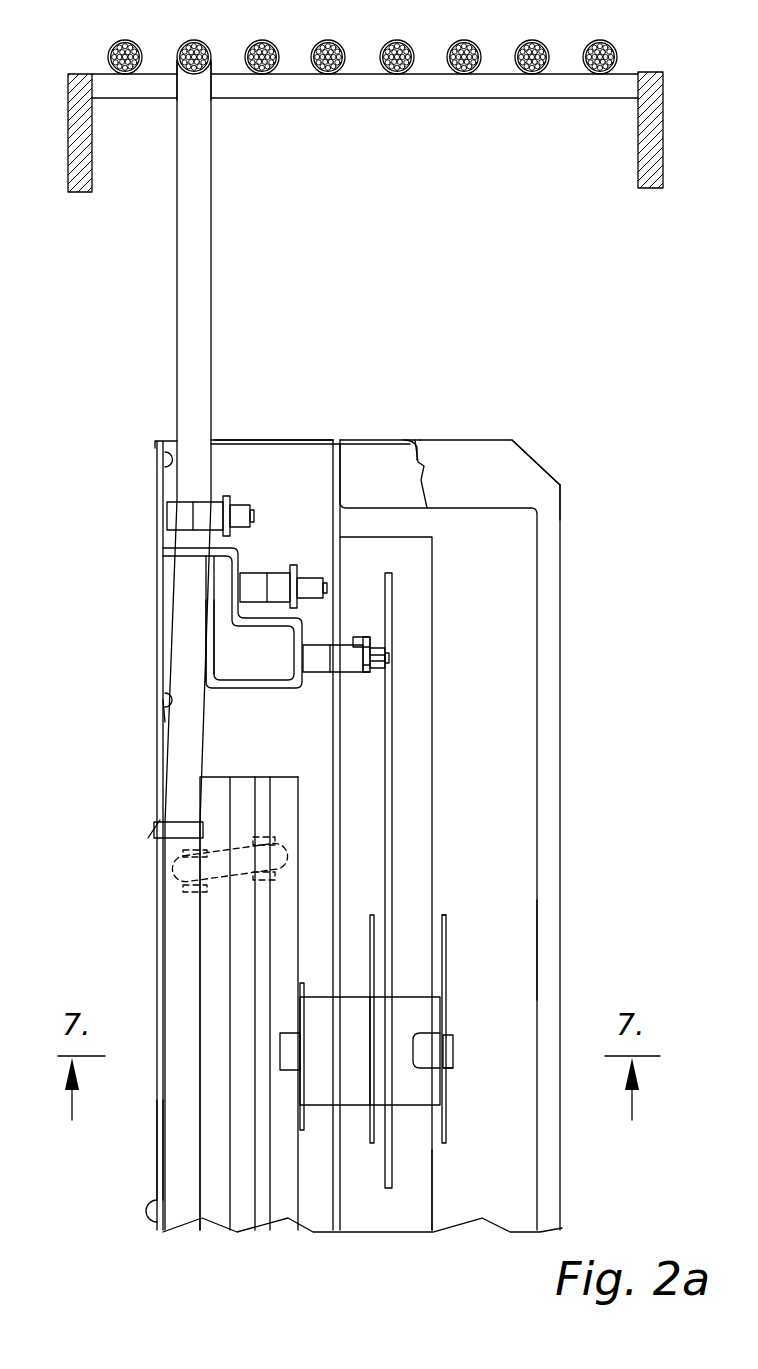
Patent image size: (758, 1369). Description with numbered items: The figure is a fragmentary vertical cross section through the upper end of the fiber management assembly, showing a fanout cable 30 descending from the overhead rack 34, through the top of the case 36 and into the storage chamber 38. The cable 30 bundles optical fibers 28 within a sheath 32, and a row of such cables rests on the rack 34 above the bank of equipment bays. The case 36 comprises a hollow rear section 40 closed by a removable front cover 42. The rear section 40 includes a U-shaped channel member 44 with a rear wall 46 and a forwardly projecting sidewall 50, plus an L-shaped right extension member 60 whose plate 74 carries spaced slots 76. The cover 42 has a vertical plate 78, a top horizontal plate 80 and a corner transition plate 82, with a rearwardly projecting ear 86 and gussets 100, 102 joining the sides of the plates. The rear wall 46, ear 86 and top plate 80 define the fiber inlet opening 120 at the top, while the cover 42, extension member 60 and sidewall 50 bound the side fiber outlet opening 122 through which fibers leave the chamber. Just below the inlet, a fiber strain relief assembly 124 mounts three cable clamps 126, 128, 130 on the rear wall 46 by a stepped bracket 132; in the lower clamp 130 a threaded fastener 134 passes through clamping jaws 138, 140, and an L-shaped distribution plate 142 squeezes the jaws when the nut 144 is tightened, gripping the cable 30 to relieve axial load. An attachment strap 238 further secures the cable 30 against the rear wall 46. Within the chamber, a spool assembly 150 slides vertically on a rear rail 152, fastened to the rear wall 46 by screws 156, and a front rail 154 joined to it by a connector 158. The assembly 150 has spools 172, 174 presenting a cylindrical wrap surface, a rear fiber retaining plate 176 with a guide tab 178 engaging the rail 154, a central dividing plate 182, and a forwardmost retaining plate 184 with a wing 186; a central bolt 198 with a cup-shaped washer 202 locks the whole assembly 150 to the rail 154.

The optical fibers 28 is at (195, 48).
The cable 30 is at (113, 44).
The sheath 32 is at (185, 45).
The overhead rack 34 is at (663, 133).
The case 36 is at (313, 442).
The storage chamber 38 is at (329, 1245).
The rear section 40 is at (160, 1140).
The front cover 42 is at (562, 808).
The channel member 44 is at (157, 630).
The rear wall 46 is at (160, 672).
The sidewall 50 is at (270, 450).
The right extension member 60 is at (423, 553).
The plate 74 is at (428, 1225).
The slots 76 is at (390, 776).
The vertical plate 78 is at (563, 632).
The top horizontal plate 80 is at (410, 440).
The corner transition plate 82 is at (548, 490).
The ear 86 is at (360, 440).
The gusset 100 is at (503, 455).
The gusset 102 is at (395, 470).
The fiber inlet opening 120 is at (232, 432).
The fiber outlet opening 122 is at (530, 944).
The fiber strain relief assembly 124 is at (260, 710).
The cable clamp 126 is at (222, 500).
The cable clamp 128 is at (267, 578).
The cable clamp 130 is at (392, 682).
The stepped bracket 132 is at (223, 700).
The threaded fastener 134 is at (388, 660).
The clamping jaw 138 is at (322, 672).
The clamping jaw 140 is at (350, 640).
The distribution plate 142 is at (366, 672).
The nut 144 is at (380, 645).
The spool assembly 150 is at (446, 920).
The rail 152 is at (220, 1222).
The rail 154 is at (248, 1222).
The screws 156 is at (153, 1213).
The connector 158 is at (170, 888).
The spool 172 is at (323, 1005).
The spool 174 is at (408, 1005).
The fiber retaining plate 176 is at (305, 1120).
The guide tab 178 is at (290, 1050).
The dividing plate 182 is at (372, 918).
The fiber retaining plate 184 is at (448, 952).
The wing 186 is at (430, 1062).
The central bolt 198 is at (455, 1045).
The cup-shaped washer 202 is at (445, 1065).
The attachment strap 238 is at (166, 827).